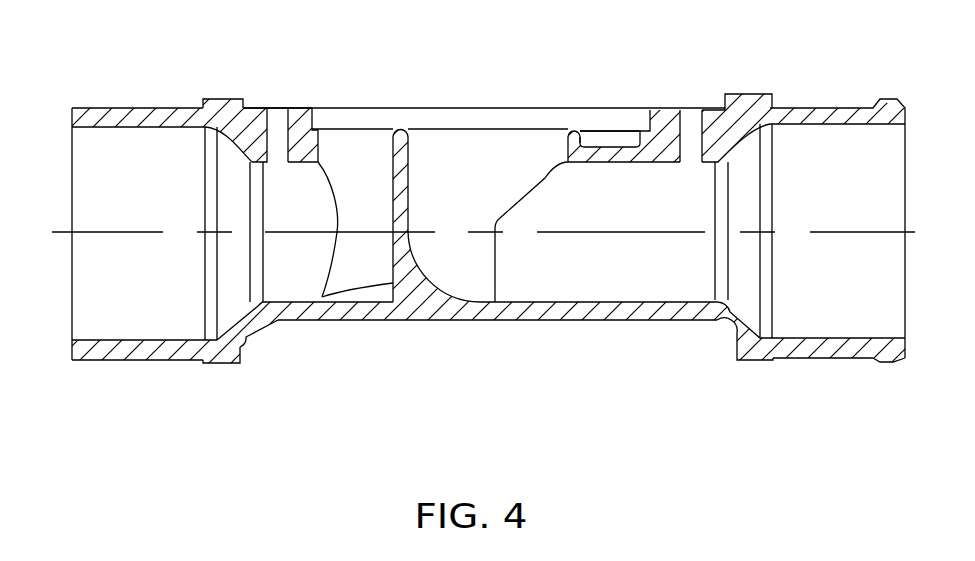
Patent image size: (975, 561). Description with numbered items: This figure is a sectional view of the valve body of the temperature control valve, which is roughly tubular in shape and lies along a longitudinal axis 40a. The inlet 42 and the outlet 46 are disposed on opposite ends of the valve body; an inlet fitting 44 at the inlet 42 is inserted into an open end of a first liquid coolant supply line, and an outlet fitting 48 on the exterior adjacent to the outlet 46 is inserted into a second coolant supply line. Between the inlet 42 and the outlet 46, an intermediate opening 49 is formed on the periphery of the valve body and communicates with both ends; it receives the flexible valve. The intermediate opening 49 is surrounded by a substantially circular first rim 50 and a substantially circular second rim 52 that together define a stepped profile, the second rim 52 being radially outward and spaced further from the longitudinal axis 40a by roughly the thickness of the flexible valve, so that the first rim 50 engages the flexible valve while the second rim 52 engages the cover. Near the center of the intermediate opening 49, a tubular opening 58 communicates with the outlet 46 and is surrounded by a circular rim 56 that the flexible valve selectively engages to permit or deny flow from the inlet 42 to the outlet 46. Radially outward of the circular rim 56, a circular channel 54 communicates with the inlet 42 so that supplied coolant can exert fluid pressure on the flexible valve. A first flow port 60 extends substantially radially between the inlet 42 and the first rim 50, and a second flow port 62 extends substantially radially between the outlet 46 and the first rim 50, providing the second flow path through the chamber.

The longitudinal axis 40a is at (56, 232).
The inlet 42 is at (113, 292).
The inlet fitting 44 is at (97, 108).
The outlet 46 is at (816, 289).
The outlet fitting 48 is at (893, 364).
The intermediate opening 49 is at (494, 108).
The first rim 50 is at (252, 110).
The second rim 52 is at (215, 99).
The circular channel 54 is at (613, 138).
The circular rim 56 is at (400, 130).
The tubular opening 58 is at (465, 174).
The first flow port 60 is at (275, 120).
The second flow port 62 is at (691, 118).